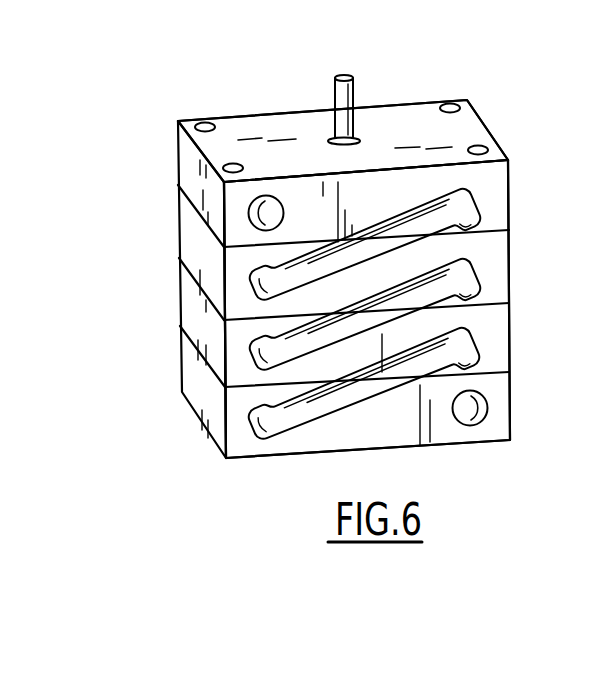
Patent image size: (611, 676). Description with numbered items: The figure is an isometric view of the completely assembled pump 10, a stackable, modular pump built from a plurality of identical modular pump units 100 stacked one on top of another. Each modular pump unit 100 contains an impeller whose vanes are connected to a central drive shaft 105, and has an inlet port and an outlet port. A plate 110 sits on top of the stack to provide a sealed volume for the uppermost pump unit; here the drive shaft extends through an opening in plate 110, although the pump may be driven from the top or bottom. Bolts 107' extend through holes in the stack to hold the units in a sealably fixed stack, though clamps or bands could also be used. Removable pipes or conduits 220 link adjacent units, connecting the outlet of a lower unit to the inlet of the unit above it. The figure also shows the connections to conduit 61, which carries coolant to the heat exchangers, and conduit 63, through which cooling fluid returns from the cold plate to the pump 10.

The pump 10 is at (335, 267).
The modular pump unit 100 is at (508, 174).
The central drive shaft 105 is at (335, 90).
The bolts 107' is at (326, 119).
The plate 110 is at (447, 133).
The removable pipes or conduits 220 is at (466, 213).
The conduit or piping 61 is at (253, 226).
The conduit or piping 63 is at (474, 422).